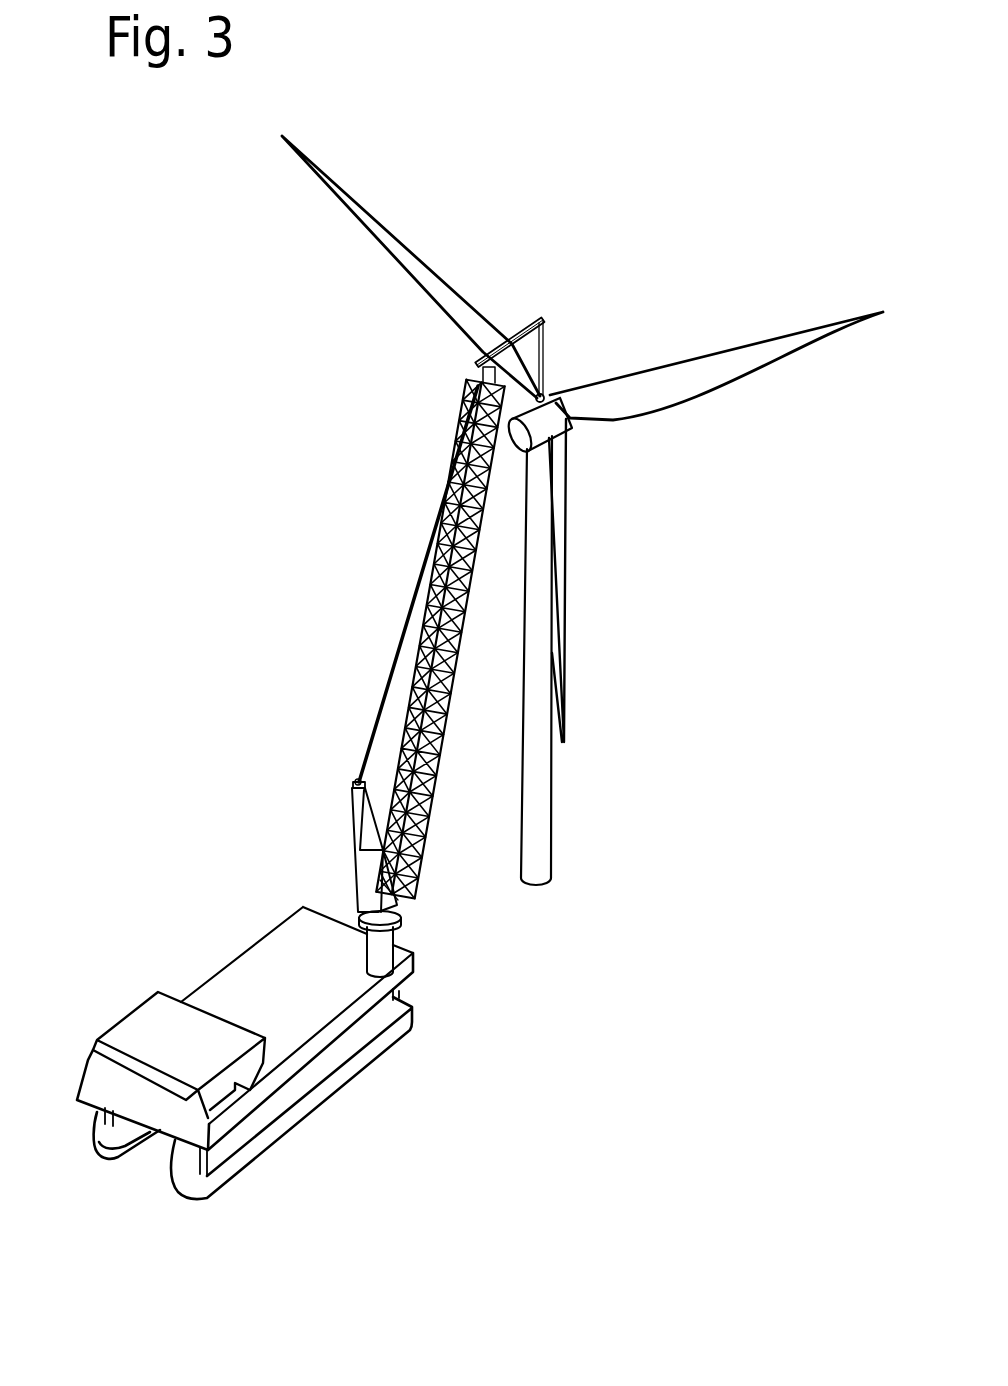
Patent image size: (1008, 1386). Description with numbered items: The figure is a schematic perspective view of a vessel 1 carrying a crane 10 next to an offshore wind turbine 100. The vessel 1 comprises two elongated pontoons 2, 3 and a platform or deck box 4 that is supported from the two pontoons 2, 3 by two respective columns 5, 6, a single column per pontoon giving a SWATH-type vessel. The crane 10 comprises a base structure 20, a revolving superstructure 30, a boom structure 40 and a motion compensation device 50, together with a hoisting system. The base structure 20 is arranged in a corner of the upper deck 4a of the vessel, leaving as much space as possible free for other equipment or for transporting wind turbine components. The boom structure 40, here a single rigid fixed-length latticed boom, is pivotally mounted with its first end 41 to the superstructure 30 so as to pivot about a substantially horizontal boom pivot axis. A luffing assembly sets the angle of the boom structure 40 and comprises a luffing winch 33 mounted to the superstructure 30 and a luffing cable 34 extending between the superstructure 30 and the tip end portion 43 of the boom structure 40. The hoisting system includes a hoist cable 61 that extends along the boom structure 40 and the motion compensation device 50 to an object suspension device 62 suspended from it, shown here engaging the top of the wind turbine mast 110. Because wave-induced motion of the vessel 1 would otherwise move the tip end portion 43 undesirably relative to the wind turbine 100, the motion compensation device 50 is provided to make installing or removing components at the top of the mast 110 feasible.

The vessel 1 is at (245, 1053).
The elongated pontoon 2 is at (112, 1160).
The elongated pontoon 3 is at (215, 1198).
The platform or deck box 4 is at (396, 980).
The upper deck 4a is at (278, 960).
The column 5 is at (103, 1120).
The column 6 is at (348, 1048).
The crane 10 is at (448, 607).
The base structure 20 is at (384, 943).
The revolving superstructure 30 is at (360, 868).
The luffing winch 33 is at (353, 780).
The luffing cable 34 is at (388, 668).
The boom structure 40 is at (432, 763).
The first end 41 is at (419, 868).
The tip end portion 43 is at (465, 399).
The motion compensation device 50 is at (510, 336).
The hoist cable 61 is at (547, 332).
The object suspension device 62 is at (545, 396).
The wind turbine 100 is at (582, 516).
The wind turbine mast 110 is at (535, 858).